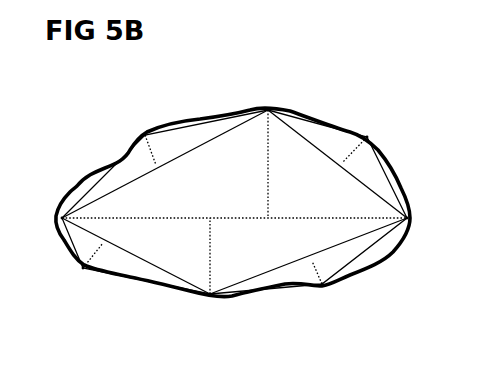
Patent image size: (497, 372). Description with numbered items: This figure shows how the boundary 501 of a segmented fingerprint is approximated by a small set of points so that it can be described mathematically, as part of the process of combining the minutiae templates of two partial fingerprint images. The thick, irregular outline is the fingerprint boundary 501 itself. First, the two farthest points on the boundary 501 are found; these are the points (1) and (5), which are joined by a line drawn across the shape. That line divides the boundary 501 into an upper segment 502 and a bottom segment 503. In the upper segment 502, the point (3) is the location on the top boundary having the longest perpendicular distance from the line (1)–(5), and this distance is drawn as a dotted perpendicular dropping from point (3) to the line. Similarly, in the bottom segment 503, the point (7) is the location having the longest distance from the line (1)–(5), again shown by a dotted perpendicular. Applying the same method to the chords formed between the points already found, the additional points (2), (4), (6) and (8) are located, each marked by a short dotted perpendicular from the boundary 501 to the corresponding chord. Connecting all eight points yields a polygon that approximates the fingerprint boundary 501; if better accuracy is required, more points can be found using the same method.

The boundary 501 is at (173, 122).
The upper segment 502 is at (293, 160).
The bottom segment 503 is at (168, 257).
The farthest point 1 is at (40, 220).
The approximation point 2 is at (132, 127).
The point of longest perpendicular distance 3 is at (271, 95).
The approximation point 4 is at (380, 127).
The farthest point 5 is at (420, 209).
The approximation point 6 is at (334, 298).
The point of longest distance in bottom segment 7 is at (209, 309).
The approximation point 8 is at (72, 282).